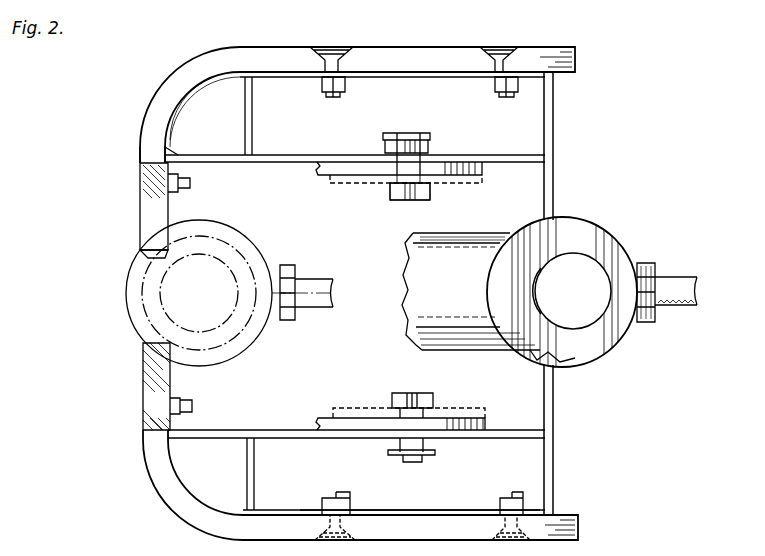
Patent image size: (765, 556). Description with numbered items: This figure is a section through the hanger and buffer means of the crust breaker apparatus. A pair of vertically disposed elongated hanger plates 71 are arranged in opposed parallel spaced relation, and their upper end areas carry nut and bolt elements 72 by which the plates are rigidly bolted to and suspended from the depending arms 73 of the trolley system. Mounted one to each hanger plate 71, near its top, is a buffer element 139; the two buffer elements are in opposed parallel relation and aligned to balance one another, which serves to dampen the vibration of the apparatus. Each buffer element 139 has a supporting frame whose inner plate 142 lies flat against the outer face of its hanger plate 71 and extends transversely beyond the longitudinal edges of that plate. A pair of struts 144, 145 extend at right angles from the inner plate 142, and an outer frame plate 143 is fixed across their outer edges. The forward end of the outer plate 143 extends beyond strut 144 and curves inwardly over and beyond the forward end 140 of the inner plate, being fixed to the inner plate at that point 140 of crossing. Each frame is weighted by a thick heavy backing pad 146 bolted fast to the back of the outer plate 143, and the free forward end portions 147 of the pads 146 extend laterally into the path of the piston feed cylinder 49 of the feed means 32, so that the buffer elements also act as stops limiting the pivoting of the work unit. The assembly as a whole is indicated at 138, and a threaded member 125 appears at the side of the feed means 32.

The buffer element 139 is at (208, 47).
The outer frame plate 143 is at (195, 97).
The supporting frame assembly 138 is at (137, 163).
The forward end of the inner plate 140 is at (173, 153).
The strut 144 is at (253, 115).
The inner plate 142 is at (227, 163).
The hanger plate 71 is at (318, 170).
The nut and bolt element 72 is at (430, 145).
The depending arm 73 is at (355, 188).
The strut 145 is at (550, 108).
The backing pad 146 is at (145, 222).
The free forward end portion of the buffer pad 147 is at (146, 250).
The feed means 32 is at (256, 236).
The piston feed cylinder 49 is at (145, 295).
The threaded shaft 125 is at (673, 277).